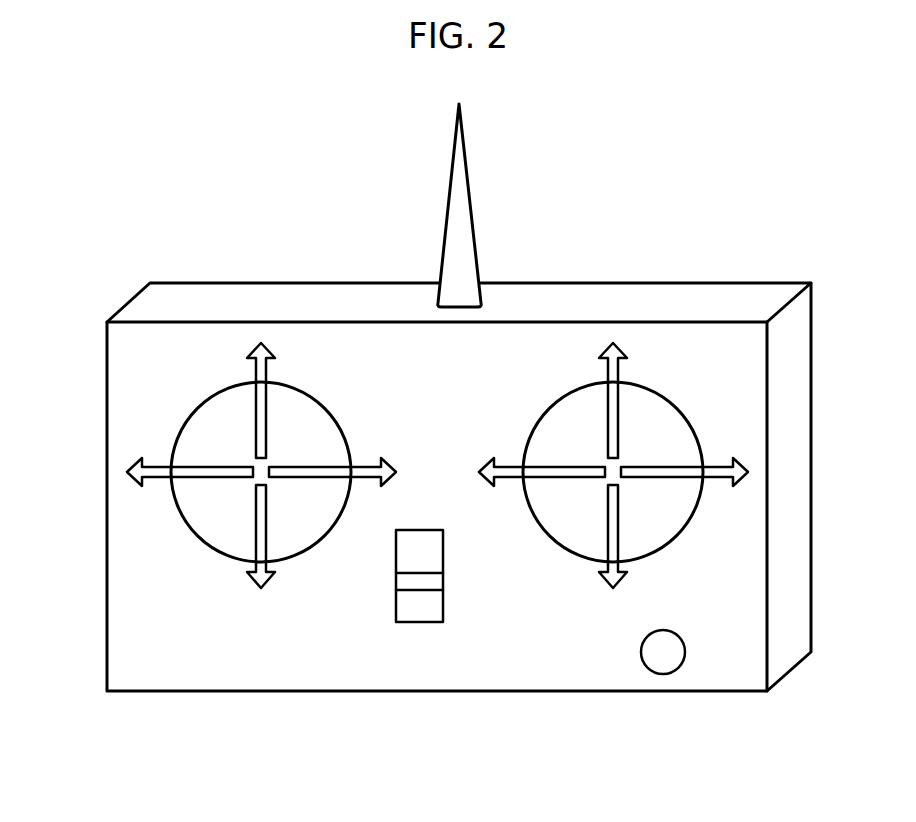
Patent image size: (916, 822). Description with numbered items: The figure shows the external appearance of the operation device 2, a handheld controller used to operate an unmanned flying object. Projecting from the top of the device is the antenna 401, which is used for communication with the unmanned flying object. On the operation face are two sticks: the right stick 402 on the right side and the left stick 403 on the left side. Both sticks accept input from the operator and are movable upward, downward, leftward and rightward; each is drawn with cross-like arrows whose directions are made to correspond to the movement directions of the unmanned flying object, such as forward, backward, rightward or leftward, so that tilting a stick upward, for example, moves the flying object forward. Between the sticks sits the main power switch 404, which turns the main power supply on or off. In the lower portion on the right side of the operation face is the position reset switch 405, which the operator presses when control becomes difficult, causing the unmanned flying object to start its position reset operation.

The operation device 2 is at (676, 124).
The antenna 401 is at (465, 236).
The right stick 402 is at (668, 511).
The left stick 403 is at (220, 511).
The main power switch 404 is at (397, 605).
The position reset switch 405 is at (663, 660).